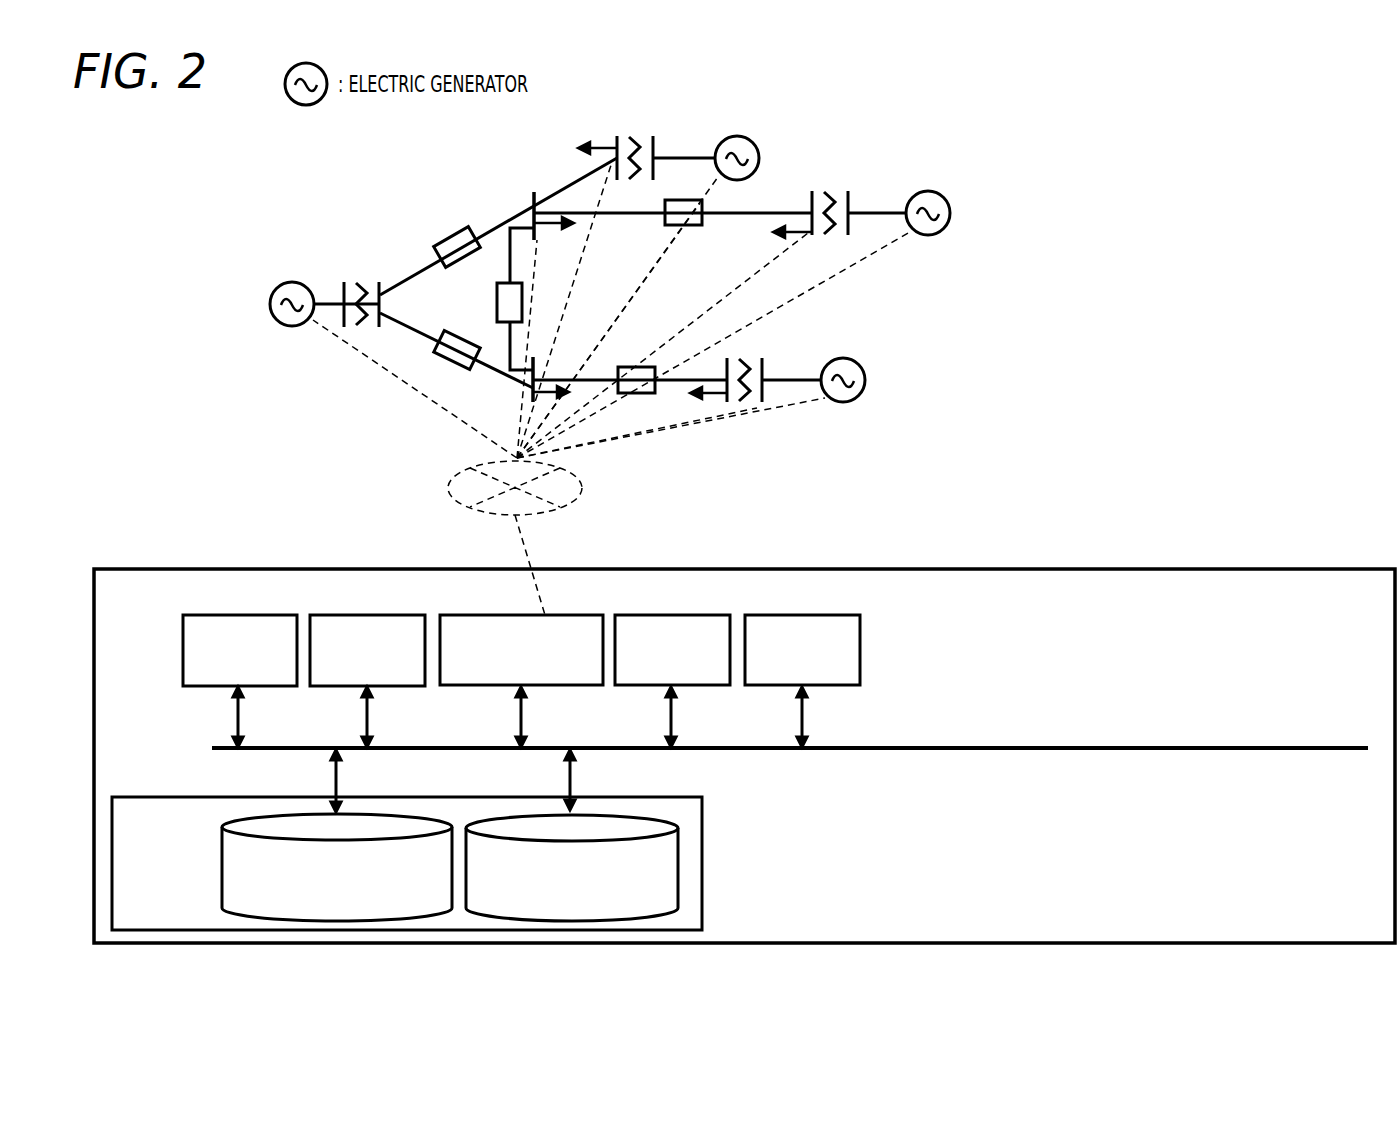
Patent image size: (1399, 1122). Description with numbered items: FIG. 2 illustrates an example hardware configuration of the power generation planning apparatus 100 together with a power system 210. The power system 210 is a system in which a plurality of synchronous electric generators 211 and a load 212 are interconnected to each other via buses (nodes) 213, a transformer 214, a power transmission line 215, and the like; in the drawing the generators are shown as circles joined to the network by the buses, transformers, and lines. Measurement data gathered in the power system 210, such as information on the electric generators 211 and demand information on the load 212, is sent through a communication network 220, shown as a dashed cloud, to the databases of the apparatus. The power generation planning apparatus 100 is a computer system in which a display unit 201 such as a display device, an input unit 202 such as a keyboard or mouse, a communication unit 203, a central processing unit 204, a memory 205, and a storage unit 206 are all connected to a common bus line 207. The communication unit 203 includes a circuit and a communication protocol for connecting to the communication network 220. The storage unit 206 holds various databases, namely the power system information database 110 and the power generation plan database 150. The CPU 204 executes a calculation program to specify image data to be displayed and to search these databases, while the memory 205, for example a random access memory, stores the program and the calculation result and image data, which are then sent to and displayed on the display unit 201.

The power generation planning apparatus 100 is at (1327, 566).
The power system information database 110 is at (247, 817).
The power generation plan database 150 is at (498, 817).
The display unit 201 is at (215, 612).
The input unit 202 is at (340, 612).
The communication unit 203 is at (558, 612).
The central processing unit (CPU) 204 is at (648, 612).
The memory 205 is at (782, 612).
The storage unit 206 is at (702, 815).
The bus line 207 is at (1297, 744).
The power system 210 is at (1023, 127).
The synchronous electric generator 211 is at (292, 281).
The load 212 is at (547, 228).
The bus (node) 213 is at (642, 137).
The transformer 214 is at (758, 405).
The power transmission line 215 is at (452, 228).
The communication network 220 is at (560, 507).